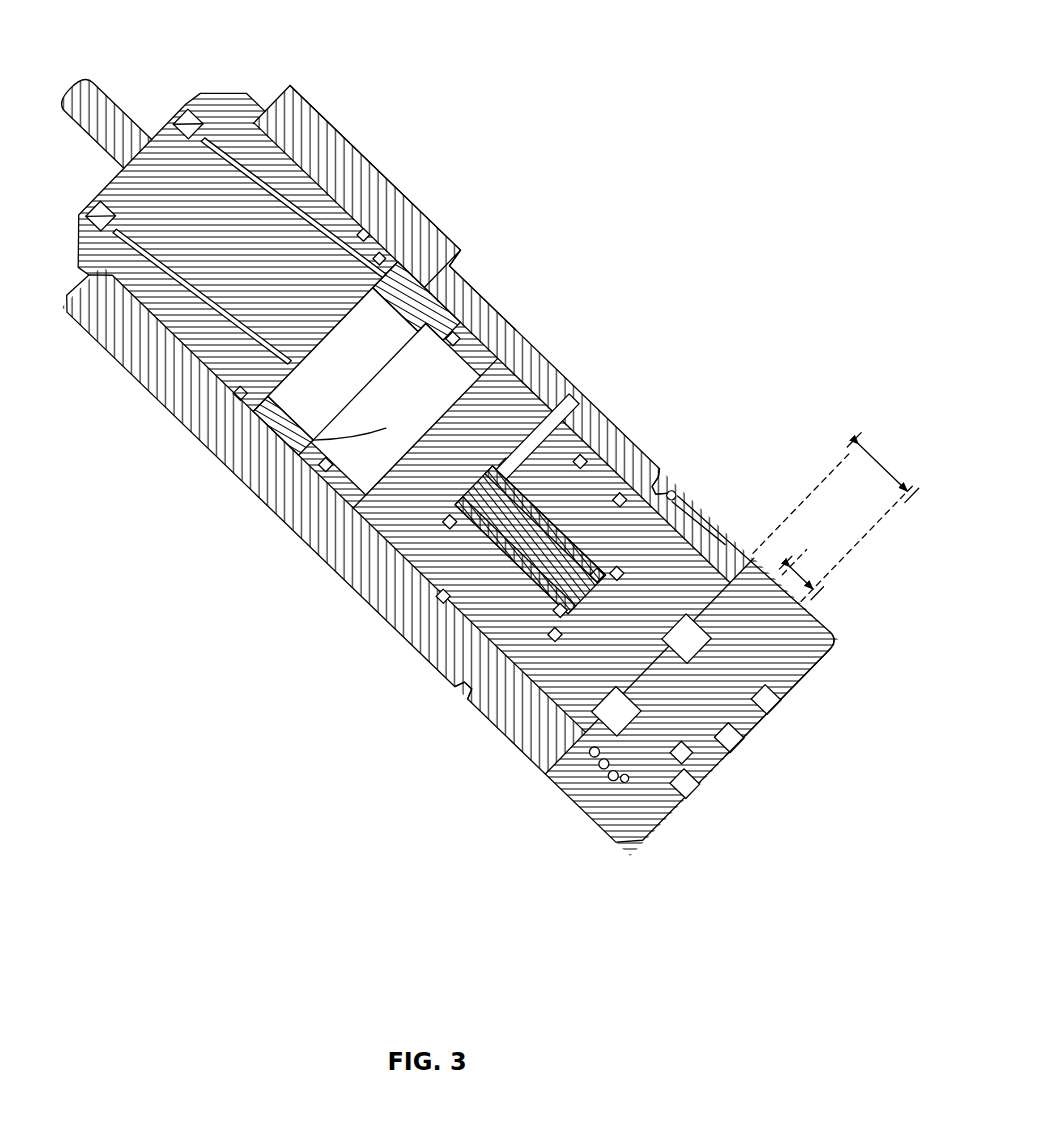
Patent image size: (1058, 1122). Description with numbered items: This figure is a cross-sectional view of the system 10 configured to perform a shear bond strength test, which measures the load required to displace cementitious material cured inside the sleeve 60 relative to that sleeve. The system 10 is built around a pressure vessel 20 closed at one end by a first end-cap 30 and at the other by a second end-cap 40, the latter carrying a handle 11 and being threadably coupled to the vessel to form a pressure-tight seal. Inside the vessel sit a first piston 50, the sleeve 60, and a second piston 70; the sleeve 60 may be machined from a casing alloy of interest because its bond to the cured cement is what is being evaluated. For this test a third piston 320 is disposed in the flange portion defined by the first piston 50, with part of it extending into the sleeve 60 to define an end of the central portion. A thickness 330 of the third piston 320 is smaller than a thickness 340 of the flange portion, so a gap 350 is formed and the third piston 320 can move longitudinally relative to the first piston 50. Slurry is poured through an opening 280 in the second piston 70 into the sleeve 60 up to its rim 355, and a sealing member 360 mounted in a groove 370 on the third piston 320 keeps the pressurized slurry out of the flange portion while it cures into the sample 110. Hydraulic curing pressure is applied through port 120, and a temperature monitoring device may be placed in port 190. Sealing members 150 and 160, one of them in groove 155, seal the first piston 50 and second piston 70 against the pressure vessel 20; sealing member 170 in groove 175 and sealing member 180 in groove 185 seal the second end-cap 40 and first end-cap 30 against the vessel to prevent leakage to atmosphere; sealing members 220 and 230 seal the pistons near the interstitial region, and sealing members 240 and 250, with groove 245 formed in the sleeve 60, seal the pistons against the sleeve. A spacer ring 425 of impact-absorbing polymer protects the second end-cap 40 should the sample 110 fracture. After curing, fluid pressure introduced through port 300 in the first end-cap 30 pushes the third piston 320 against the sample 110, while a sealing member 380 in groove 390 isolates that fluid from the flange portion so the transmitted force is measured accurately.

The system 10 is at (740, 174).
The handle 11 is at (95, 97).
The pressure vessel 20 is at (745, 545).
The first end-cap 30 is at (757, 730).
The second end-cap 40 is at (235, 195).
The first piston 50 is at (737, 523).
The sleeve 60 is at (545, 505).
The second piston 70 is at (490, 365).
The sample 110 is at (522, 440).
The port 120 is at (186, 114).
The sealing member 150 is at (590, 775).
The groove 155 is at (600, 763).
The sealing member 160 is at (453, 333).
The sealing member 170 is at (378, 258).
The groove 175 is at (367, 230).
The sealing member 180 is at (583, 790).
The groove 185 is at (582, 782).
The port 190 is at (100, 205).
The sealing member 220 is at (553, 610).
The sealing member 230 is at (443, 598).
The sealing member 240 is at (555, 635).
The groove 245 is at (545, 665).
The sealing member 250 is at (445, 525).
The opening 280 is at (260, 460).
The port 300 is at (727, 743).
The third piston 320 is at (800, 683).
The thickness 330 is at (800, 575).
The thickness 340 is at (885, 470).
The gap 350 is at (590, 727).
The rim 355 is at (528, 405).
The sealing member 360 is at (674, 490).
The groove 370 is at (681, 497).
The sealing member 380 is at (640, 795).
The groove 390 is at (683, 800).
The spacer ring 425 is at (415, 307).